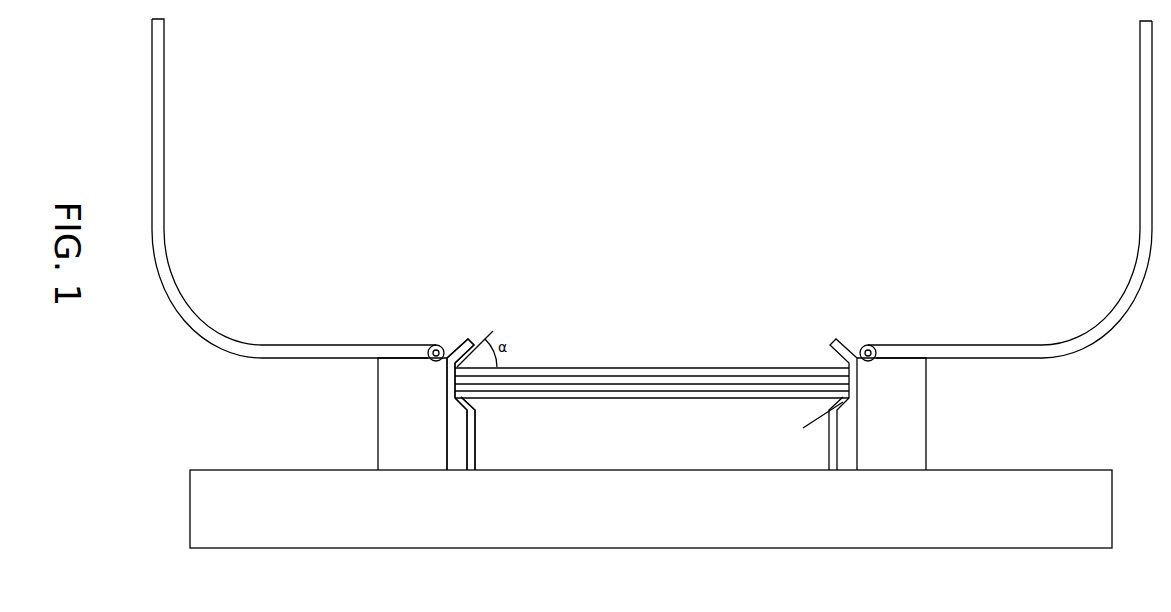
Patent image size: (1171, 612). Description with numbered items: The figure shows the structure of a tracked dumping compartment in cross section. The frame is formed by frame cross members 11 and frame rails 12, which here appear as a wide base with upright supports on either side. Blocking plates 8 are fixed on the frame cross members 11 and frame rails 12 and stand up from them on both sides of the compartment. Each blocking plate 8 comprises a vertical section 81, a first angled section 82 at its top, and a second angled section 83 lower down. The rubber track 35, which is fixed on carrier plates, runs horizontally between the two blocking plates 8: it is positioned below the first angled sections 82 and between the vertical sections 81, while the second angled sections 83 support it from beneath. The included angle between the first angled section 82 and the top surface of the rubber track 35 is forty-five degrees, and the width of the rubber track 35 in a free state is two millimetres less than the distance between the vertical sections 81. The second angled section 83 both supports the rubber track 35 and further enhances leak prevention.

The blocking plate 8 is at (546, 403).
The frame cross member 11 is at (760, 520).
The frame rail 12 is at (397, 425).
The rubber track 35 is at (580, 372).
The vertical section 81 is at (469, 403).
The first angled section 82 is at (480, 388).
The second angled section 83 is at (469, 413).